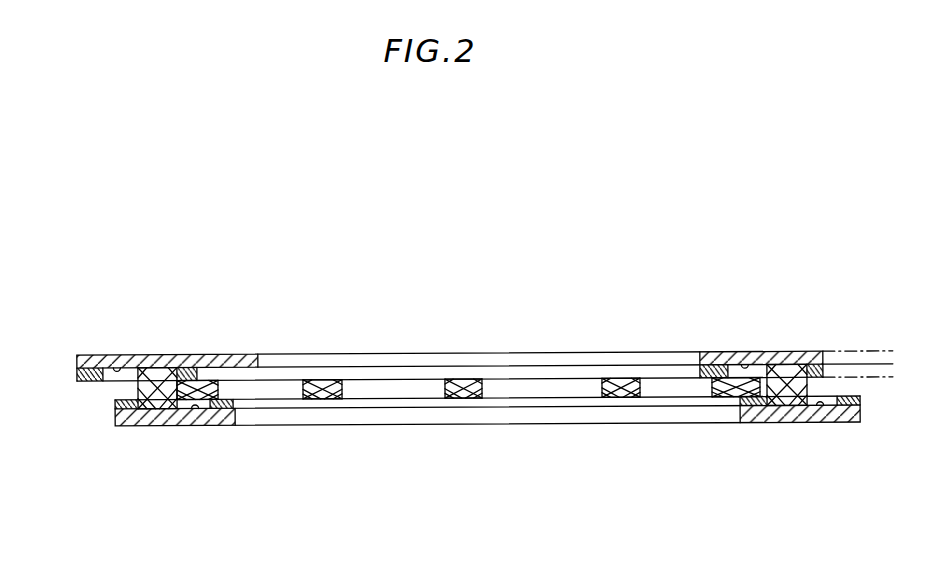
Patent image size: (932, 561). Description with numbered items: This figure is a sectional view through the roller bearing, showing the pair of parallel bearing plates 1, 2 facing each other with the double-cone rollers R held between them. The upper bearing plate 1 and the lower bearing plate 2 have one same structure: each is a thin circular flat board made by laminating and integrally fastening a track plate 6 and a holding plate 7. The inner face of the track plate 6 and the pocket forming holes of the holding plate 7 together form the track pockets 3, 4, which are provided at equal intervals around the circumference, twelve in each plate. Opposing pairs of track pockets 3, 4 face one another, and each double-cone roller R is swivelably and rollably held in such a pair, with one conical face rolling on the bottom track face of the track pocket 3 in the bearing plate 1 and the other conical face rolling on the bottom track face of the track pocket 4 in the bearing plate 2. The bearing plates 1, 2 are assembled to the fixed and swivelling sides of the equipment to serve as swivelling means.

The upper bearing plate 1 is at (30, 287).
The lower bearing plate 2 is at (63, 470).
The track pocket 3 is at (118, 370).
The track pocket 4 is at (195, 410).
The track plate 6 is at (97, 356).
The holding plate 7 is at (77, 374).
The double-cone roller R is at (155, 368).